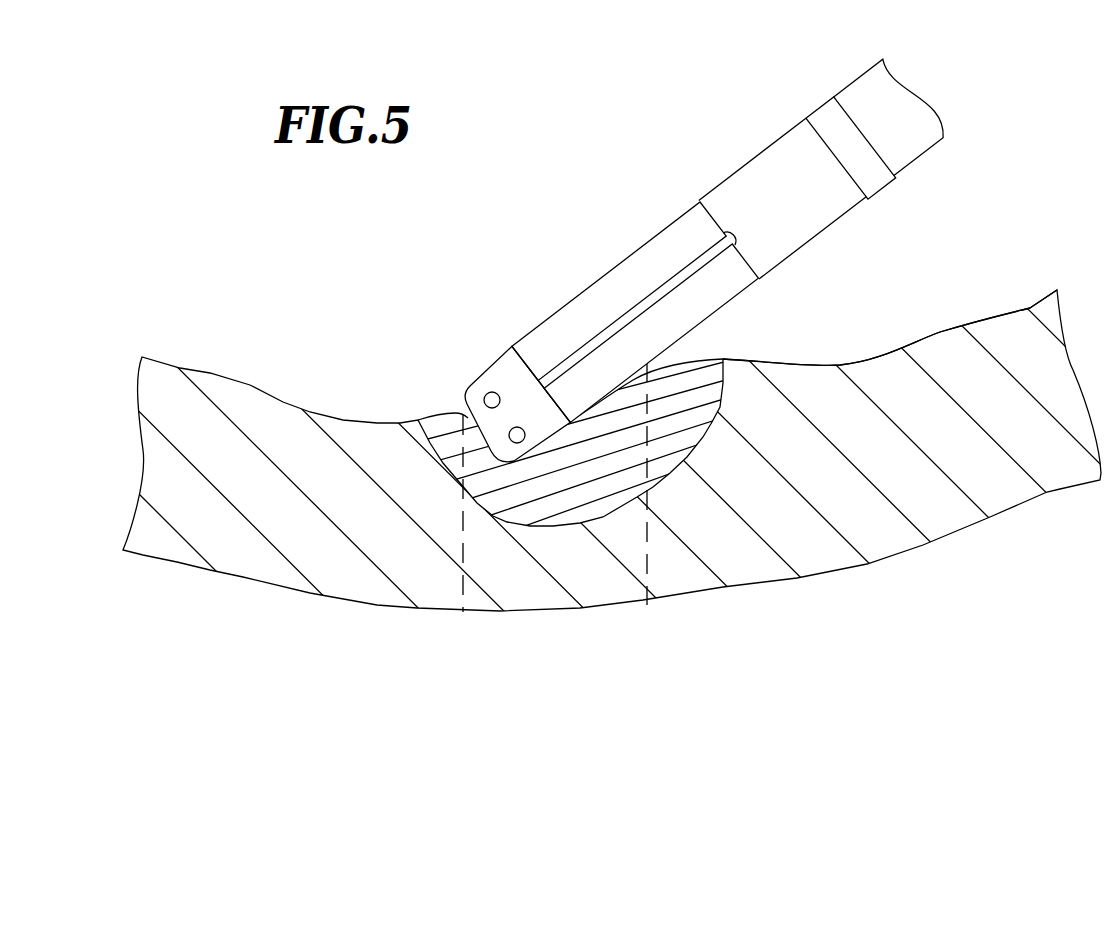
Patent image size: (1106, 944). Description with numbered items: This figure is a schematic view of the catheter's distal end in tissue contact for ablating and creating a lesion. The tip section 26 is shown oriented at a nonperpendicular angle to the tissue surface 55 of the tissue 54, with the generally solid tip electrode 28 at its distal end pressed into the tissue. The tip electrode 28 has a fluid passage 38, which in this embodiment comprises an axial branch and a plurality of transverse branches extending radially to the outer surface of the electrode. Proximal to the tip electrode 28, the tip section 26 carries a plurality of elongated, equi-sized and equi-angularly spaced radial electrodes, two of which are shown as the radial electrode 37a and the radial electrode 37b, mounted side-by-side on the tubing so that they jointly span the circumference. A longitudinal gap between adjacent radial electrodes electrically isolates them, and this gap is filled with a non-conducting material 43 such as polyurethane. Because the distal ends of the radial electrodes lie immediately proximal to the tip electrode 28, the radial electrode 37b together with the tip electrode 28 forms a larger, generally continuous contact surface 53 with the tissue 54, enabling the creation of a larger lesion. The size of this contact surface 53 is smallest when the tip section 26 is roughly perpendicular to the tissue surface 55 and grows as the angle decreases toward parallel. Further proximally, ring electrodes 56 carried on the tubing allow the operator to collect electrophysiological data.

The tip section 26 is at (738, 173).
The tip electrode 28 is at (494, 363).
The radial electrode 37a is at (608, 273).
The radial electrode 37b is at (733, 299).
The fluid passage 38 is at (490, 402).
The non-conducting material 43 is at (733, 234).
The generally continuous contact surface 53 is at (645, 618).
The tissue 54 is at (812, 552).
The tissue surface 55 is at (945, 331).
The ring electrodes 56 is at (819, 109).